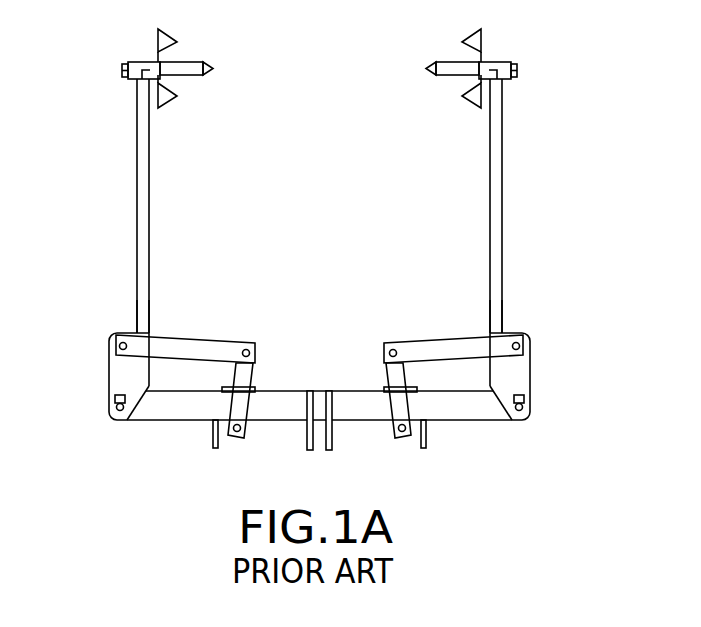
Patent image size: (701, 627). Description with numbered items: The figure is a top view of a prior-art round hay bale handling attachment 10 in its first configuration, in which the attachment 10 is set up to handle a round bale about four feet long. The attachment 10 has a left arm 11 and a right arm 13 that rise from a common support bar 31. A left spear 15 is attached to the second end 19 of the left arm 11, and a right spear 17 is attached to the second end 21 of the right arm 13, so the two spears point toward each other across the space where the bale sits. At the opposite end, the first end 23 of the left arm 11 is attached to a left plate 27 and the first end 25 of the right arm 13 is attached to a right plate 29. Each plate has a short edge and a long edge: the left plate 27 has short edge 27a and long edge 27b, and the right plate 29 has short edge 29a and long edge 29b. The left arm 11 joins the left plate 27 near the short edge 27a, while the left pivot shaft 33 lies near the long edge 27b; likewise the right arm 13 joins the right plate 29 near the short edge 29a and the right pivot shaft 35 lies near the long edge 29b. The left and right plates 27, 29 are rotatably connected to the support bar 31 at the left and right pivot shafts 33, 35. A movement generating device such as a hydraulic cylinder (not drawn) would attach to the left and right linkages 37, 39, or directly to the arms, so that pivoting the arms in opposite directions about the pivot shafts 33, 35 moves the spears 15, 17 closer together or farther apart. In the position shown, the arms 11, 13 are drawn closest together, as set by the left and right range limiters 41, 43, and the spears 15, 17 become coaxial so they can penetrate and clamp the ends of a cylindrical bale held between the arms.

The attachment 10 is at (344, 47).
The left arm 11 is at (141, 190).
The right arm 13 is at (498, 180).
The left spear 15 is at (187, 76).
The right spear 17 is at (452, 76).
The second end of left arm 19 is at (141, 72).
The second end of right arm 21 is at (498, 72).
The first end of left arm 23 is at (149, 333).
The first end of right arm 25 is at (496, 333).
The left plate 27 is at (120, 373).
The short edge of left plate 27a is at (152, 372).
The long edge of left plate 27b is at (108, 383).
The right plate 29 is at (518, 370).
The short edge of right plate 29a is at (478, 366).
The long edge of right plate 29b is at (530, 385).
The support bar 31 is at (349, 412).
The left pivot shaft 33 is at (123, 413).
The right pivot shaft 35 is at (517, 412).
The left linkage 37 is at (217, 350).
The right linkage 39 is at (385, 377).
The left range limiter 41 is at (247, 382).
The right range limiter 43 is at (390, 377).